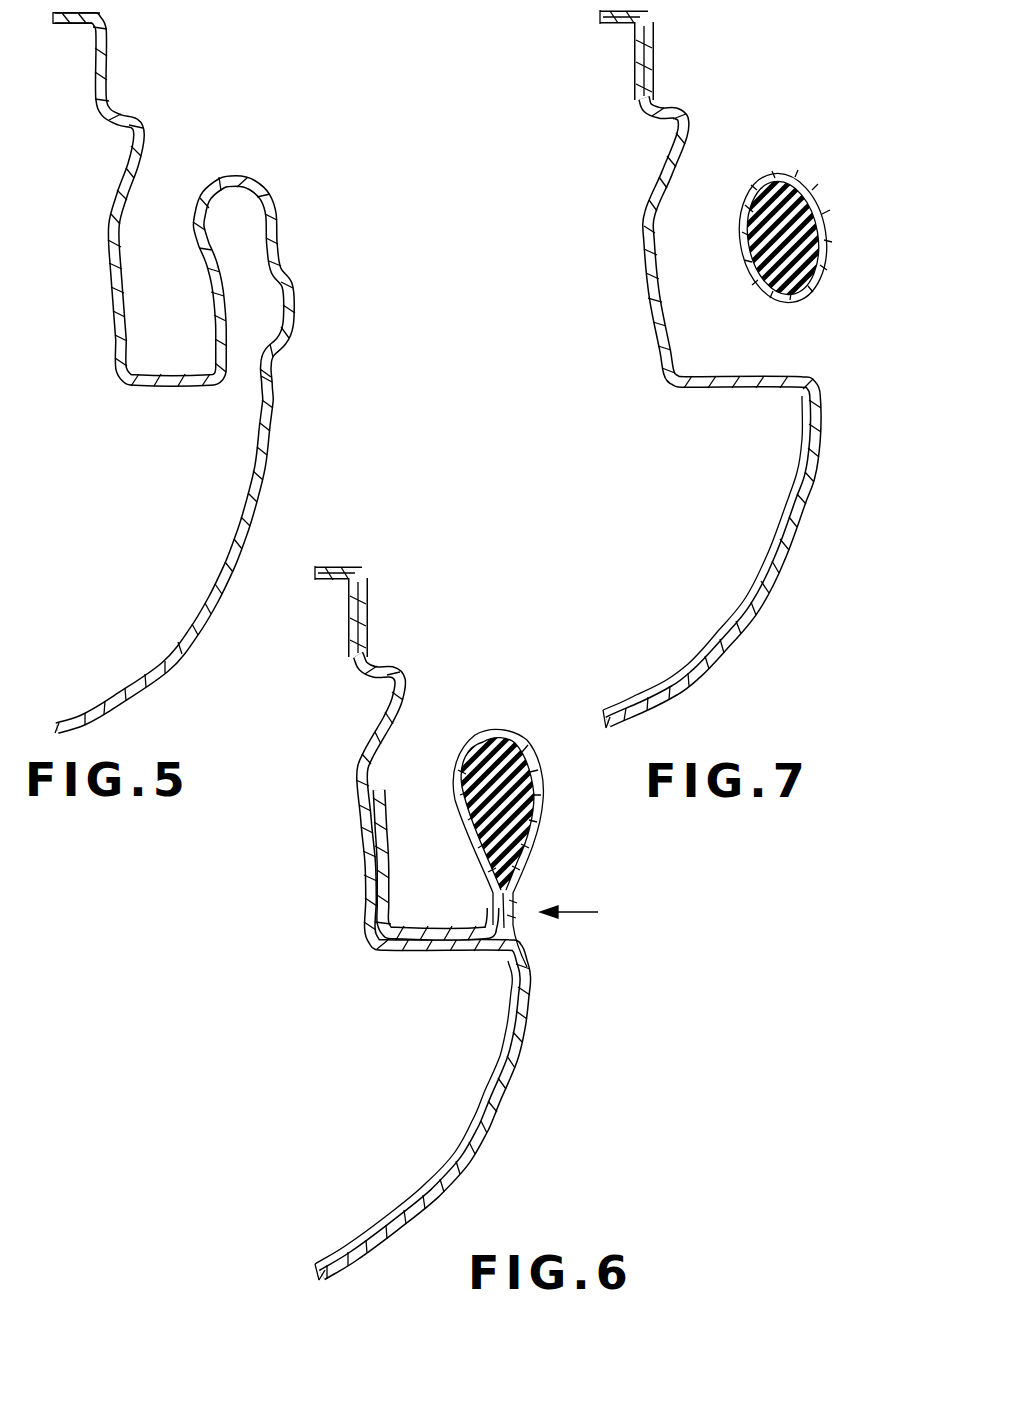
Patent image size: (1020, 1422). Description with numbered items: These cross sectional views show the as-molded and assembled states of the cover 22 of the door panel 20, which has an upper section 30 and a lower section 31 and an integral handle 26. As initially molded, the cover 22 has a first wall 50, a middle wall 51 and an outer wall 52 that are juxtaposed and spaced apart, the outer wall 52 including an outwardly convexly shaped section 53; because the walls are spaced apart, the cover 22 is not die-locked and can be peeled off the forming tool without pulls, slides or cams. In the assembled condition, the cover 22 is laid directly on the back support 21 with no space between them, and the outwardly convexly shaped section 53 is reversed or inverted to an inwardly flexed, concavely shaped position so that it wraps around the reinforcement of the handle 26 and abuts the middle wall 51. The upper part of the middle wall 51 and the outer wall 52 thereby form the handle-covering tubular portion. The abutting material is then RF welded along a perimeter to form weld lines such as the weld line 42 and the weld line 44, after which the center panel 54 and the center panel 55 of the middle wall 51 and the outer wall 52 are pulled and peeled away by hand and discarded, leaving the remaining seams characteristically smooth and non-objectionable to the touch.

In FIG. 7, the door panel 20 is at (748, 57).
In FIG. 6, the door panel 20 is at (443, 591).
In FIG. 7, the back support 21 is at (621, 117).
In FIG. 6, the back support 21 is at (328, 673).
In FIG. 5, the cover 22 is at (150, 58).
In FIG. 7, the cover 22 is at (675, 12).
In FIG. 6, the cover 22 is at (381, 544).
In FIG. 7, the handle 26 is at (792, 163).
In FIG. 7, the upper section 30 is at (672, 113).
In FIG. 6, the upper section 30 is at (395, 660).
In FIG. 7, the lower section 31 is at (790, 580).
In FIG. 6, the lower section 31 is at (497, 1135).
In FIG. 7, the weld line 42 is at (786, 302).
In FIG. 7, the weld line 44 is at (790, 380).
In FIG. 5, the first wall 50 is at (110, 270).
In FIG. 5, the middle wall 51 is at (192, 248).
In FIG. 6, the middle wall 51 is at (455, 775).
In FIG. 5, the outer wall 52 is at (277, 235).
In FIG. 6, the outer wall 52 is at (540, 770).
In FIG. 5, the outwardly convexly shaped section 53 is at (299, 335).
In FIG. 6, the outwardly convexly shaped section 53 is at (530, 855).
In FIG. 7, the center panel 54 is at (825, 228).
In FIG. 6, the center panel 54 is at (520, 900).
In FIG. 7, the center panel 55 is at (742, 246).
In FIG. 6, the center panel 55 is at (493, 893).